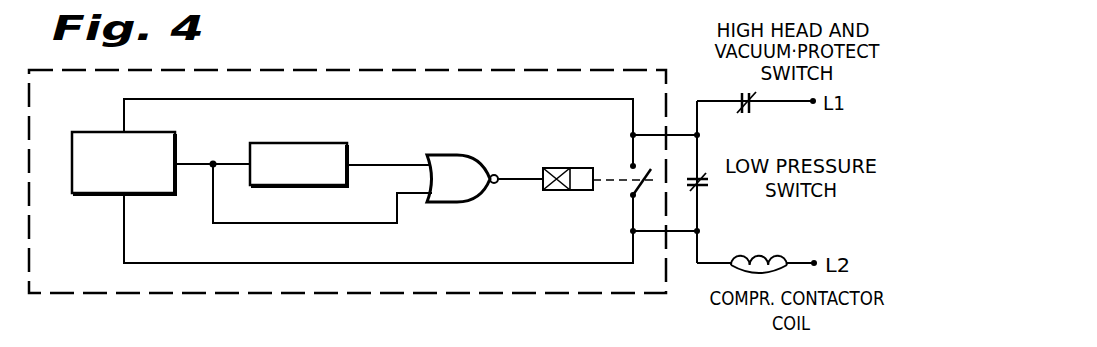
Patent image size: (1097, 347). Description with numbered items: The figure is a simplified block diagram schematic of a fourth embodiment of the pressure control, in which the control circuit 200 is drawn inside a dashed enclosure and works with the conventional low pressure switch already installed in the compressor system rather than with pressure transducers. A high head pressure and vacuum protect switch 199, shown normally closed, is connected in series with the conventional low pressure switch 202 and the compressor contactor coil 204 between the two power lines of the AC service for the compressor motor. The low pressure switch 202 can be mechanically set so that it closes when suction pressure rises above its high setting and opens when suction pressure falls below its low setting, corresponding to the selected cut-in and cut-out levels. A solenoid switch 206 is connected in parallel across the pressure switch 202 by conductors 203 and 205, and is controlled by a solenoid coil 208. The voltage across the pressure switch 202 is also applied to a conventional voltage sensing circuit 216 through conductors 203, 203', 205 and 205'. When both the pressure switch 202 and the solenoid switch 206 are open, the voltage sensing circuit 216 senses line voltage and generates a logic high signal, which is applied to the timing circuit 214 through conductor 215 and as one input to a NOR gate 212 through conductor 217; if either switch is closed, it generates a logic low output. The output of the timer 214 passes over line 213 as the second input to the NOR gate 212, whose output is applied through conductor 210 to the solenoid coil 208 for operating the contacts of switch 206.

The high head pressure and vacuum protect switch 199 is at (751, 109).
The control circuit 200 is at (398, 69).
The low pressure switch 202 is at (704, 165).
The conductor 203 is at (665, 280).
The conductor 203' is at (380, 227).
The compressor contactor coil 204 is at (746, 258).
The conductor 205 is at (655, 89).
The conductor 205' is at (380, 105).
The solenoid switch 206 is at (623, 166).
The solenoid coil 208 is at (557, 167).
The conductor 210 is at (523, 181).
The NOR gate 212 is at (450, 154).
The line 213 is at (384, 164).
The timing circuit 214 is at (291, 143).
The conductor 215 is at (227, 161).
The voltage sensing circuit 216 is at (176, 131).
The conductor 217 is at (256, 225).